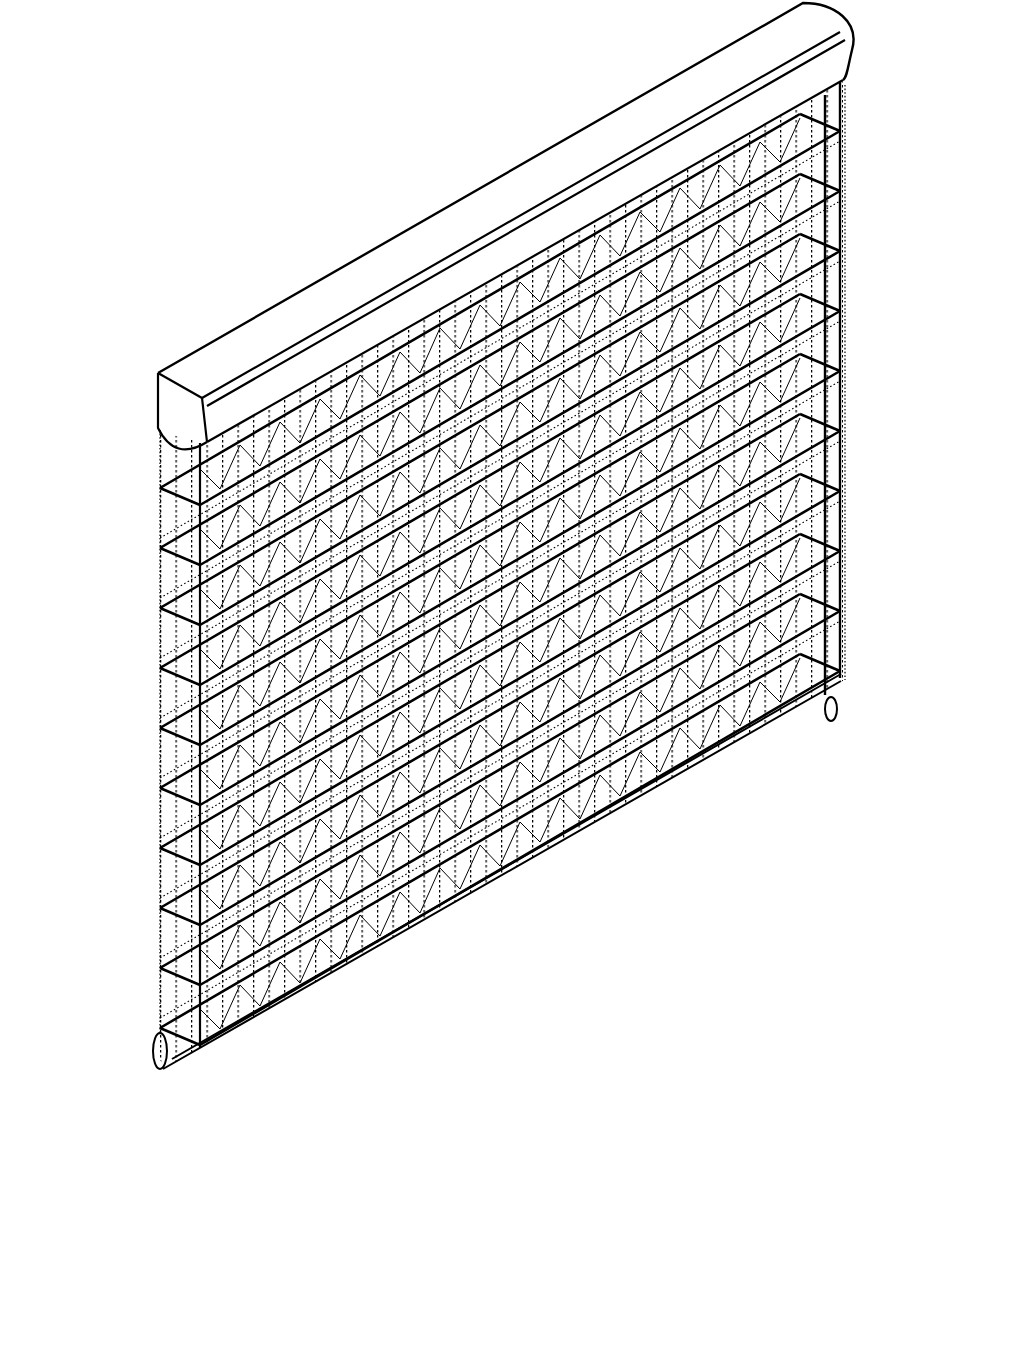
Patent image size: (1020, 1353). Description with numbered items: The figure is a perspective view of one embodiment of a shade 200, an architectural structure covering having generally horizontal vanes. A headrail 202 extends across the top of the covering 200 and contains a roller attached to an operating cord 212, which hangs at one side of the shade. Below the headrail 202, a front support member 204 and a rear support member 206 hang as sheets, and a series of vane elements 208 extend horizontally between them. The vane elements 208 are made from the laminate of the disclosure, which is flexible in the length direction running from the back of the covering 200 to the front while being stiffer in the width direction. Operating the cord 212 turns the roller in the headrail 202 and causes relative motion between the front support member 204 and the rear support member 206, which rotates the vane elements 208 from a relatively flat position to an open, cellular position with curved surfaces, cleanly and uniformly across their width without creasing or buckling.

The shade 200 is at (393, 121).
The headrail 202 is at (228, 348).
The front support member 204 is at (170, 835).
The rear support member 206 is at (163, 462).
The vane element 208 is at (163, 562).
The operating cord 212 is at (843, 168).